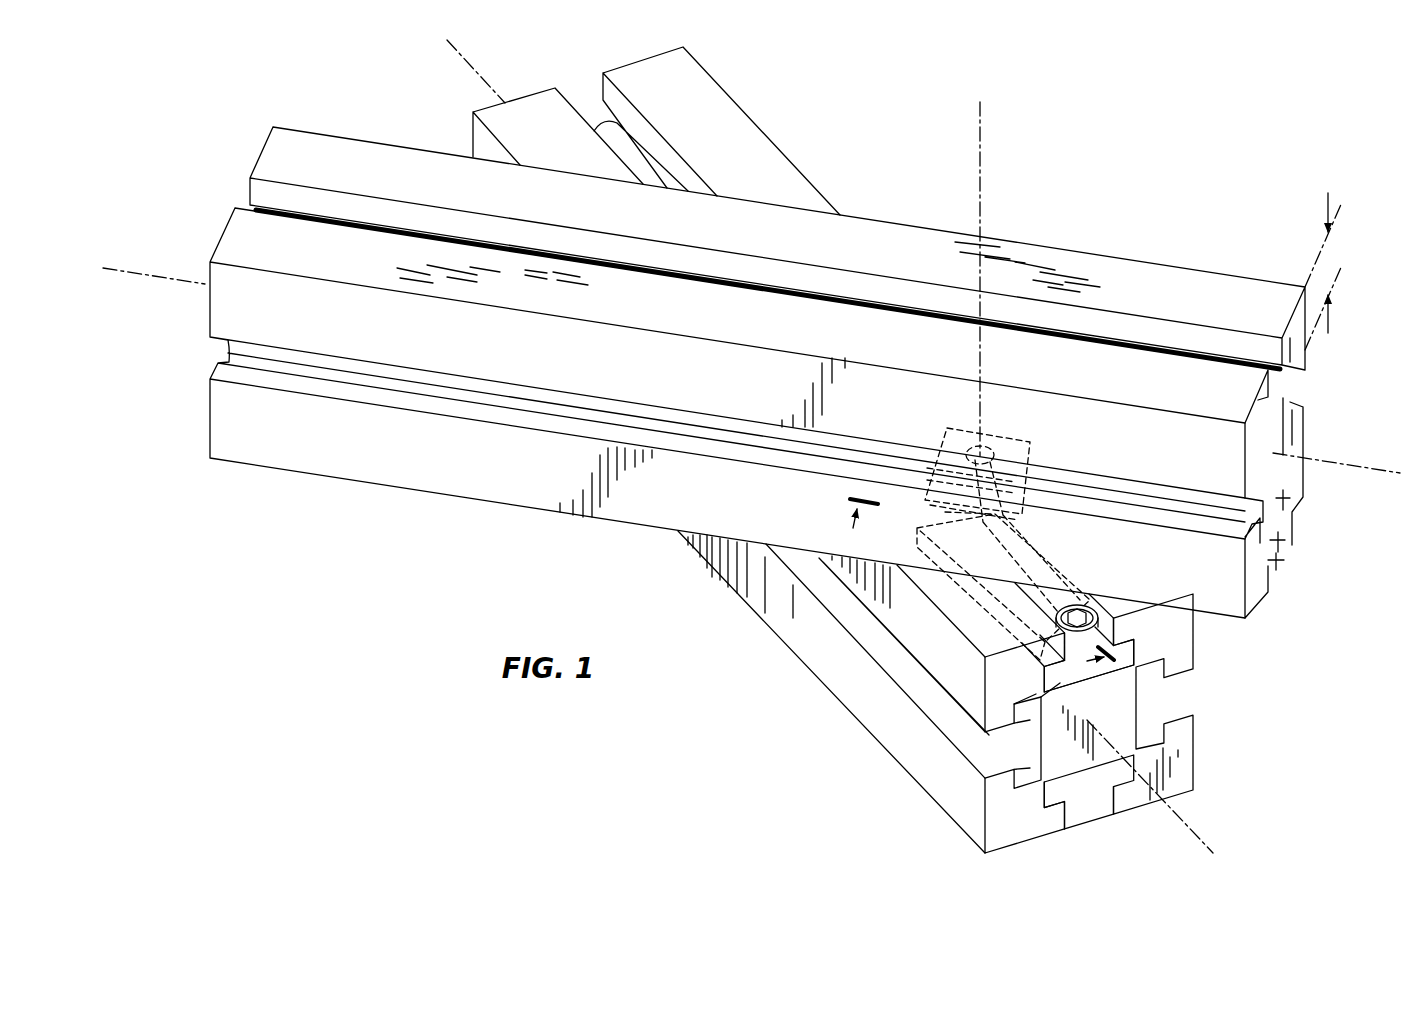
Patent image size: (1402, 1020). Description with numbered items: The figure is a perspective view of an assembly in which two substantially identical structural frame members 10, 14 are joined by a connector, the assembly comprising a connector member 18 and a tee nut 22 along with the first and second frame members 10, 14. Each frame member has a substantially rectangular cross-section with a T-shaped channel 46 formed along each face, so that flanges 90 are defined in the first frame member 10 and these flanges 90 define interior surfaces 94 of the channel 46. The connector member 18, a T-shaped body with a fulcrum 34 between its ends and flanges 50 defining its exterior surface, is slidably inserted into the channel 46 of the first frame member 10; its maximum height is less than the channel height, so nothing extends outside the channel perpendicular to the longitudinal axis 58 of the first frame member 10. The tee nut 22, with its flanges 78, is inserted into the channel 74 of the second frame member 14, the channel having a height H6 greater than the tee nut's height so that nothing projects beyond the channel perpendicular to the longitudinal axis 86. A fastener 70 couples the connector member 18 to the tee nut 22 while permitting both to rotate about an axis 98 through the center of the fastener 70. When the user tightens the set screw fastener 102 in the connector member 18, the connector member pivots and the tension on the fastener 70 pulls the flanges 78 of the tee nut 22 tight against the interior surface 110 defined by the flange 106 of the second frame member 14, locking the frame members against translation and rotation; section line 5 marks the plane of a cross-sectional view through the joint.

The first frame member 10 is at (701, 113).
The second frame member 14 is at (346, 157).
The connector member 18 is at (1002, 581).
The tee nut 22 is at (1031, 440).
The fulcrum 34 is at (1005, 628).
The channel 46 is at (1096, 816).
The flange 50 is at (1135, 657).
The longitudinal axis 58 is at (1195, 828).
The fastener 70 is at (993, 448).
The channel 74 is at (1278, 568).
The flanges 78 is at (1043, 457).
The longitudinal axis 86 is at (1351, 458).
The flanges 90 is at (1053, 820).
The interior surfaces 94 is at (1066, 792).
The axis 98 is at (988, 180).
The fastener 102 is at (1098, 612).
The flange 106 is at (1285, 502).
The interior surface 110 is at (1280, 546).
The height of the channel H6 is at (1331, 271).
The section line 5 is at (976, 587).